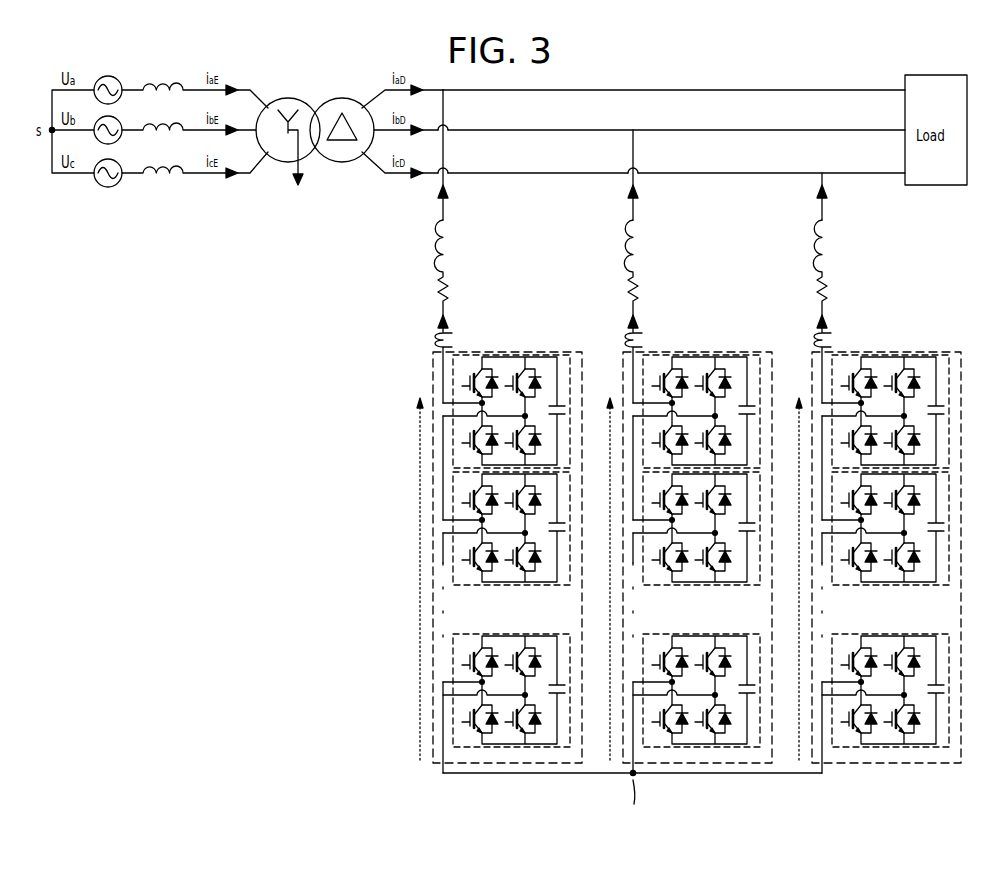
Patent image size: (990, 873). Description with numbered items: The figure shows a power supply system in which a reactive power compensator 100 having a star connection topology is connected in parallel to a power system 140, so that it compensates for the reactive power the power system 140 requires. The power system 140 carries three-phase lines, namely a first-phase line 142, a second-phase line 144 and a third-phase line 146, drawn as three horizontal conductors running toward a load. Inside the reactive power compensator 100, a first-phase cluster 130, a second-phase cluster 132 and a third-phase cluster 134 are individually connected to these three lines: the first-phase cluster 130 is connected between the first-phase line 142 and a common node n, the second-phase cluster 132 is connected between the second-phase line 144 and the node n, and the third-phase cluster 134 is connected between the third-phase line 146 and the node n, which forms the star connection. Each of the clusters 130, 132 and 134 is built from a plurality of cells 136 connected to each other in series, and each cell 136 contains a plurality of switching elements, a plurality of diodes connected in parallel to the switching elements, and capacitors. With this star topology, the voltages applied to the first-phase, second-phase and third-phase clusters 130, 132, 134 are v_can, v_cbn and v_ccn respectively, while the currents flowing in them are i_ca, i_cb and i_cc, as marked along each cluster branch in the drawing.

The reactive power compensator 100 is at (364, 266).
The first-phase cluster 130 is at (507, 351).
The second-phase cluster 132 is at (697, 351).
The third-phase cluster 134 is at (886, 351).
The cell 136 is at (452, 374).
The power system 140 is at (778, 53).
The first-phase line 142 is at (668, 89).
The second-phase line 144 is at (716, 129).
The third-phase line 146 is at (762, 172).